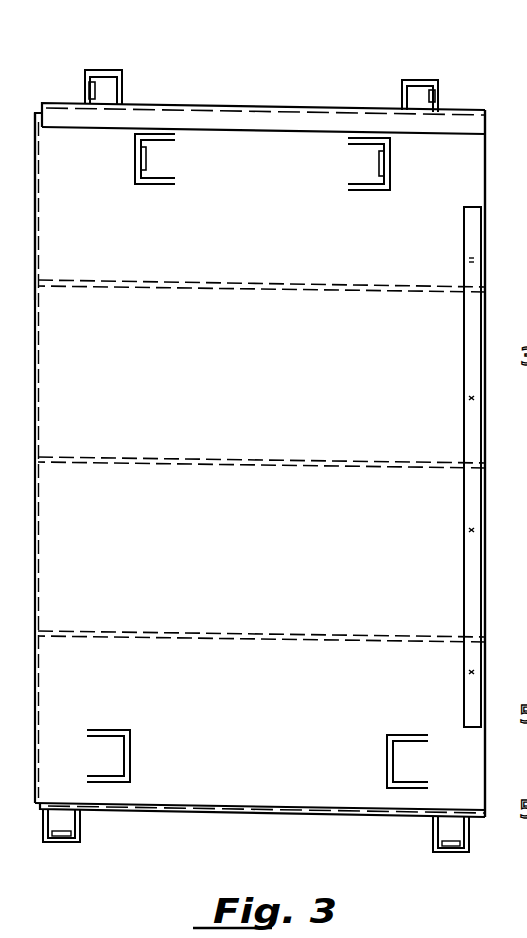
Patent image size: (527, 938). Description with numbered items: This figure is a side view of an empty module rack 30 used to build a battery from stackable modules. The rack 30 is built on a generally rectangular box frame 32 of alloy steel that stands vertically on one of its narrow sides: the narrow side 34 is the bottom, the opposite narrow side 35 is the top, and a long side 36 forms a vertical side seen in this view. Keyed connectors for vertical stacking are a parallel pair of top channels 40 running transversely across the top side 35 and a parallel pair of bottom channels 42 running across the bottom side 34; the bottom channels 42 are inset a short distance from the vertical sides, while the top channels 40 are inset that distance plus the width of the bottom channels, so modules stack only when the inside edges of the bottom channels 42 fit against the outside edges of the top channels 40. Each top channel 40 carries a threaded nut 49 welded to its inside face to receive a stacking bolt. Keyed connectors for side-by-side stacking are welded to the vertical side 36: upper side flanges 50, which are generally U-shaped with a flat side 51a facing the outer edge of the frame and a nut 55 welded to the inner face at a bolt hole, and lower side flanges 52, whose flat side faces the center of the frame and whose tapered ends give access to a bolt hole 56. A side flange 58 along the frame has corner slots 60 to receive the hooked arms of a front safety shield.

The module rack 30 is at (326, 71).
The box frame 32 is at (37, 113).
The bottom side 34 is at (248, 812).
The top side 35 is at (203, 105).
The long side 36 is at (305, 396).
The top channels 40 is at (121, 80).
The bottom channels 42 is at (82, 828).
The threaded nut 49 is at (88, 90).
The upper side flanges 50 is at (150, 185).
The flat side 51a is at (135, 158).
The lower side flanges 52 is at (131, 742).
The nut 55 is at (146, 157).
The bolt hole 56 is at (519, 217).
The side flange 58 is at (486, 568).
The corner slots 60 is at (519, 257).